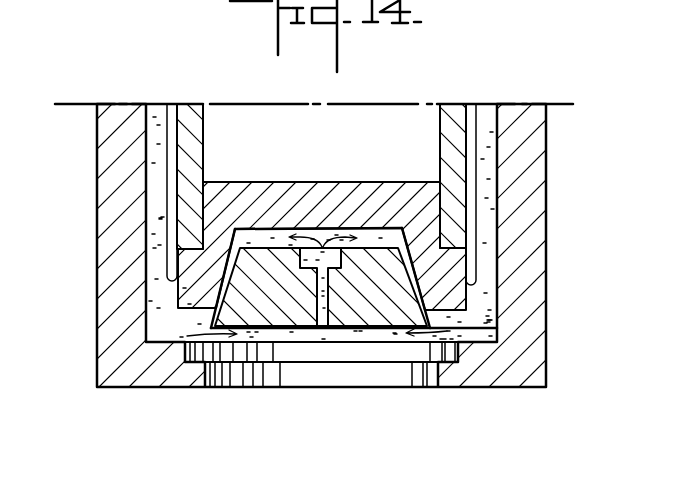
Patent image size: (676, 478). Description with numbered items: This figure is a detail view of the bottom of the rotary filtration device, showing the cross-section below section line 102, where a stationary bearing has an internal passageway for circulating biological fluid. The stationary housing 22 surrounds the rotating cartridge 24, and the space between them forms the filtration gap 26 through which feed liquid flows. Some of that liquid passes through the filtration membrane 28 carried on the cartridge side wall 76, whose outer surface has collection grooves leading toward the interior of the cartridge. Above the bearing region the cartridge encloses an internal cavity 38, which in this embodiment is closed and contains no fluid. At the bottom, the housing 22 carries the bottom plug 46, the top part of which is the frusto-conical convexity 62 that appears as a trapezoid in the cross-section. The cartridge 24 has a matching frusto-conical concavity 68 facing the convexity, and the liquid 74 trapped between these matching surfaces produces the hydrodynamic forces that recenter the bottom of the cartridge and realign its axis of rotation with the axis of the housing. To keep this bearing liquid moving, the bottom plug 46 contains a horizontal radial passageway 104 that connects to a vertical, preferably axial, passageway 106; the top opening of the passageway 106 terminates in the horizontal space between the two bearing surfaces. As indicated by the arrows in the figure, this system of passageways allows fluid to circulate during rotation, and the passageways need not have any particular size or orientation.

The section line 102 is at (80, 103).
The housing 22 is at (97, 229).
The cartridge 24 is at (156, 185).
The filtration gap 26 is at (157, 266).
The filtration membrane 28 is at (173, 106).
The internal cavity 38 is at (333, 139).
The bottom plug 46 is at (243, 388).
The convexity 62 is at (284, 295).
The concavity 68 is at (313, 214).
The liquid 74 is at (379, 231).
The cartridge side wall 76 is at (188, 103).
The horizontal radial passageway 104 is at (362, 333).
The vertical axial passageway 106 is at (343, 280).